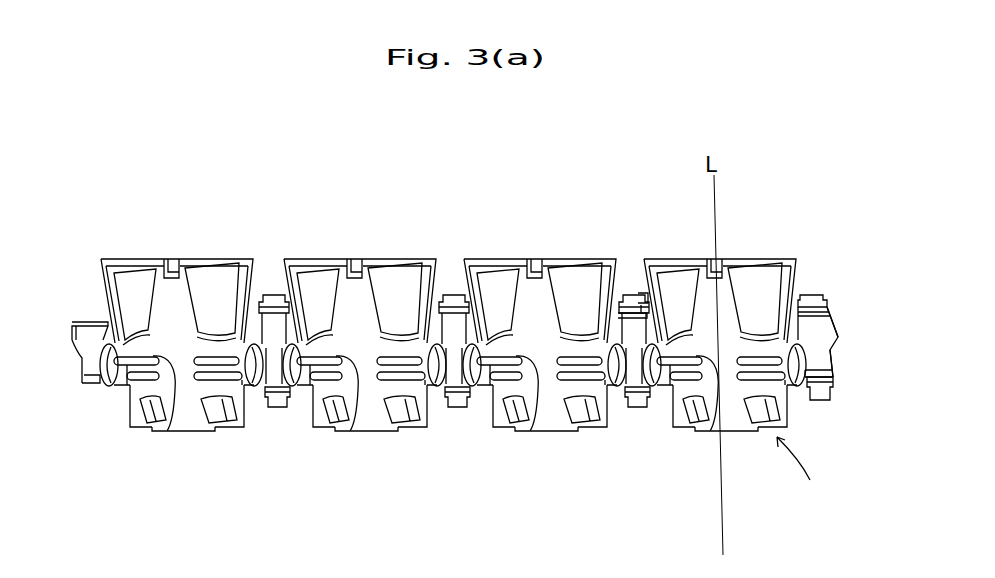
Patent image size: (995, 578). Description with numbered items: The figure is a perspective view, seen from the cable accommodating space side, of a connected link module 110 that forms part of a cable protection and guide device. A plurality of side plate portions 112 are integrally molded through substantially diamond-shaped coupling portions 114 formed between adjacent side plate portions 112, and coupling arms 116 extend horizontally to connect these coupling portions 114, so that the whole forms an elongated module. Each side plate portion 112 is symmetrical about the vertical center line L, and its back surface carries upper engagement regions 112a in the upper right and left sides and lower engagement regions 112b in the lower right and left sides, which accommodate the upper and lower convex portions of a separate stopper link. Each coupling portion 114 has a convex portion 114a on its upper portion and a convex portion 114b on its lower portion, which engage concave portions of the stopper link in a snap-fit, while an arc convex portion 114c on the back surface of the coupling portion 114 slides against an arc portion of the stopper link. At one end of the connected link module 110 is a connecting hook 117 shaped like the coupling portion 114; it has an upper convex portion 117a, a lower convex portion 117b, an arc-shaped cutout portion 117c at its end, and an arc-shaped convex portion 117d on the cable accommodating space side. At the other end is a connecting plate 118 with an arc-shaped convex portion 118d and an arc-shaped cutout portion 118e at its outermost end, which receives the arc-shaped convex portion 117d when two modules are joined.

The connected link module 110 is at (847, 493).
The side plate portion 112 is at (176, 413).
The upper engagement region 112a is at (491, 300).
The lower engagement region 112b is at (490, 437).
The coupling portion 114 is at (265, 407).
The convex portion 114a is at (270, 293).
The convex portion 114b is at (280, 407).
The arc convex portion 114c is at (637, 292).
The coupling arm 116 is at (345, 430).
The connecting hook 117 is at (815, 357).
The convex portion 117a is at (808, 293).
The convex portion 117b is at (825, 400).
The arc-shaped cutout portion 117c is at (834, 350).
The arc-shaped convex portion 117d is at (837, 365).
The connecting plate 118 is at (83, 337).
The arc-shaped convex portion 118d is at (99, 379).
The arc-shaped cutout portion 118e is at (78, 362).